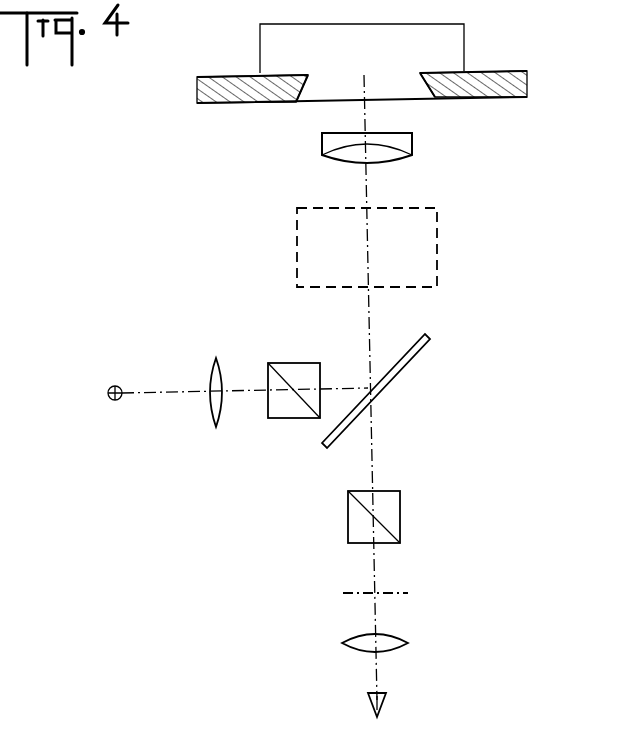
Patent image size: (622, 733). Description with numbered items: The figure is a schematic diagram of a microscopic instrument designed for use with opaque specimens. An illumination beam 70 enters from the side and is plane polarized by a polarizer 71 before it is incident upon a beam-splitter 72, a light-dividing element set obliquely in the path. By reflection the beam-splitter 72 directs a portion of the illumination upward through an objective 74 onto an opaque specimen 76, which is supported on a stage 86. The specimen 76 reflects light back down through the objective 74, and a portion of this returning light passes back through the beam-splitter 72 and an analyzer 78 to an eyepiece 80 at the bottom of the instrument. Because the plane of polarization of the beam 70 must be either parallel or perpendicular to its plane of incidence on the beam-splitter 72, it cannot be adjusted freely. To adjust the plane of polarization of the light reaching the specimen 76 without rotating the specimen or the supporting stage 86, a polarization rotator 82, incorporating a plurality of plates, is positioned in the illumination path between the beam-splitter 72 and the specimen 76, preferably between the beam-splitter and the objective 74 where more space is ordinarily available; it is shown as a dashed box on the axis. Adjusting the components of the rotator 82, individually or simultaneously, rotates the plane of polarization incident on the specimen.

The beam 70 is at (240, 397).
The polarizer 71 is at (293, 362).
The beam-splitter 72 is at (418, 356).
The objective 74 is at (412, 139).
The opaque specimen 76 is at (453, 43).
The analyzer 78 is at (400, 500).
The eyepiece 80 is at (352, 640).
The polarization rotator 82 is at (297, 235).
The stage 86 is at (497, 82).